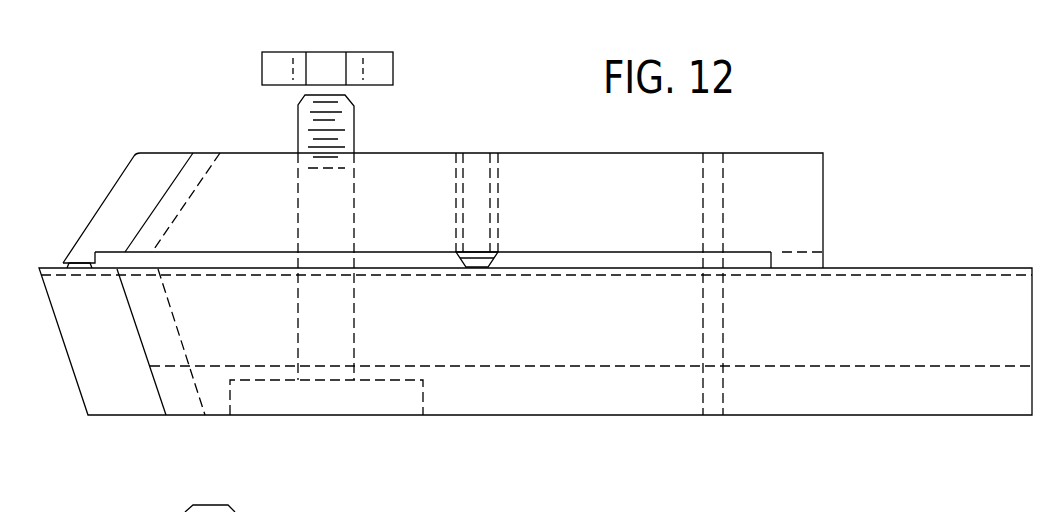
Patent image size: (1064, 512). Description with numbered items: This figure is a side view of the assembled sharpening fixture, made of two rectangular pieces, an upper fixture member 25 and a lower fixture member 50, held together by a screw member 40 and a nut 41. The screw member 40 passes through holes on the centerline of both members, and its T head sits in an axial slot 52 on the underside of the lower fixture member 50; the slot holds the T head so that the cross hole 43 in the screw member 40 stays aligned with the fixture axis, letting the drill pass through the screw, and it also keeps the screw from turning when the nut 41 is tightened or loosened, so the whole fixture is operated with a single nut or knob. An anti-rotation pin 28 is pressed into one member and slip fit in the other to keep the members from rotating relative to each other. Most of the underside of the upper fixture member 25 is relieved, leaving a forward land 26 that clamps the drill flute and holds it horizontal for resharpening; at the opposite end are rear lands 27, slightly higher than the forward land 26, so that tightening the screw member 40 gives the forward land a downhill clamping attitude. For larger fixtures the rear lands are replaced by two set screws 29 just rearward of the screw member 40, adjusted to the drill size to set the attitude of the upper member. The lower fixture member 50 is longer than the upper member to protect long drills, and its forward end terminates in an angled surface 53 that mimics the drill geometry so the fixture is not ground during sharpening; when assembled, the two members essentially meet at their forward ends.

The upper fixture member 25 is at (795, 190).
The land 26 is at (87, 259).
The lands 27 is at (817, 260).
The anti-rotation pin 28 is at (714, 258).
The set screws 29 is at (477, 252).
The screw member 40 is at (348, 138).
The nut 41 is at (382, 68).
The cross hole 43 is at (310, 258).
The lower fixture member 50 is at (980, 350).
The axial slot 52 is at (398, 405).
The angle 53 is at (92, 380).